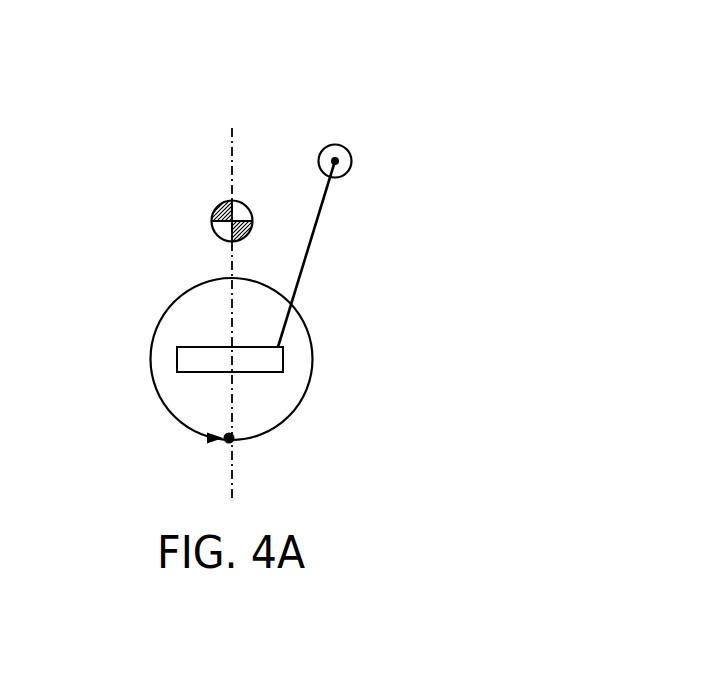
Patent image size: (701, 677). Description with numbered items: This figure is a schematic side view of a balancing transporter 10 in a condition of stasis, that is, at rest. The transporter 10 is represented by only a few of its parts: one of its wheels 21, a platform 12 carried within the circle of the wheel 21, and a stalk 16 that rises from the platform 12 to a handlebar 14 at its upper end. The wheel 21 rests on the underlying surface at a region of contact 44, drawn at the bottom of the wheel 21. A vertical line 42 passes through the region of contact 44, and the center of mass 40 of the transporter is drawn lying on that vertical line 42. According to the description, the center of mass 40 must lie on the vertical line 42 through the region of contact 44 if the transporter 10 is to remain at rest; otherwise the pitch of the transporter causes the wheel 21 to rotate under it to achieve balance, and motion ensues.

The transporter 10 is at (90, 147).
The platform 12 is at (198, 347).
The handlebar 14 is at (347, 149).
The stalk 16 is at (317, 227).
The wheel 21 is at (310, 338).
The center of mass 40 is at (218, 206).
The vertical line 42 is at (232, 131).
The region of contact 44 is at (232, 442).